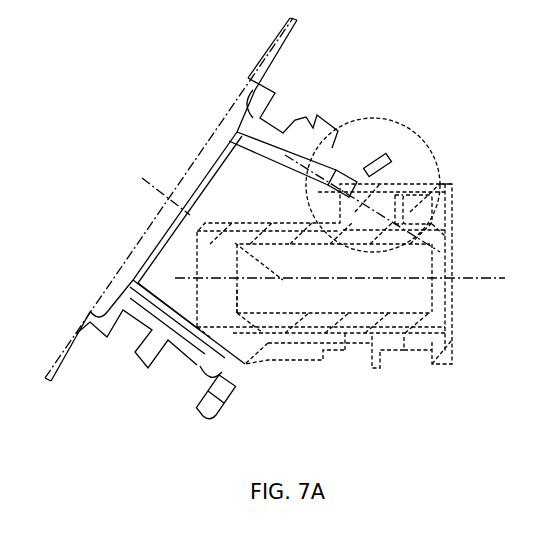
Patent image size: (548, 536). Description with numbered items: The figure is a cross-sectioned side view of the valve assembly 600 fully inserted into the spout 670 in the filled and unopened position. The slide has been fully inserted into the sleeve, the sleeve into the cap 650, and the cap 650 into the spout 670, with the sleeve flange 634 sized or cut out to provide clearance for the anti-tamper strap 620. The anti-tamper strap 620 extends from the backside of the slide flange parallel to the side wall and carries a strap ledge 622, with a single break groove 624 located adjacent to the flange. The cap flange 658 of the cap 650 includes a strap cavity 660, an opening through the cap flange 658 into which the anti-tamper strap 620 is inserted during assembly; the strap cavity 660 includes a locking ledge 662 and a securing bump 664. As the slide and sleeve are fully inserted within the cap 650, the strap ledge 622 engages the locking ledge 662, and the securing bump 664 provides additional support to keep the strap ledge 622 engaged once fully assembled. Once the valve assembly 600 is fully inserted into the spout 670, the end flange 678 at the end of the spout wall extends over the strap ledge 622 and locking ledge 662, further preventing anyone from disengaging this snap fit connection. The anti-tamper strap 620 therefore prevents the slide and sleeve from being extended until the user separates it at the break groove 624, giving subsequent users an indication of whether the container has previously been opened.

The valve assembly 600 is at (379, 443).
The anti-tamper strap 620 is at (400, 183).
The strap ledge 622 is at (414, 248).
The break groove 624 is at (466, 164).
The sleeve flange 634 is at (374, 373).
The cap 650 is at (304, 396).
The cap flange 658 is at (182, 425).
The strap cavity 660 is at (408, 155).
The locking ledge 662 is at (364, 173).
The securing bump 664 is at (262, 246).
The spout 670 is at (83, 404).
The end flange 678 is at (183, 362).